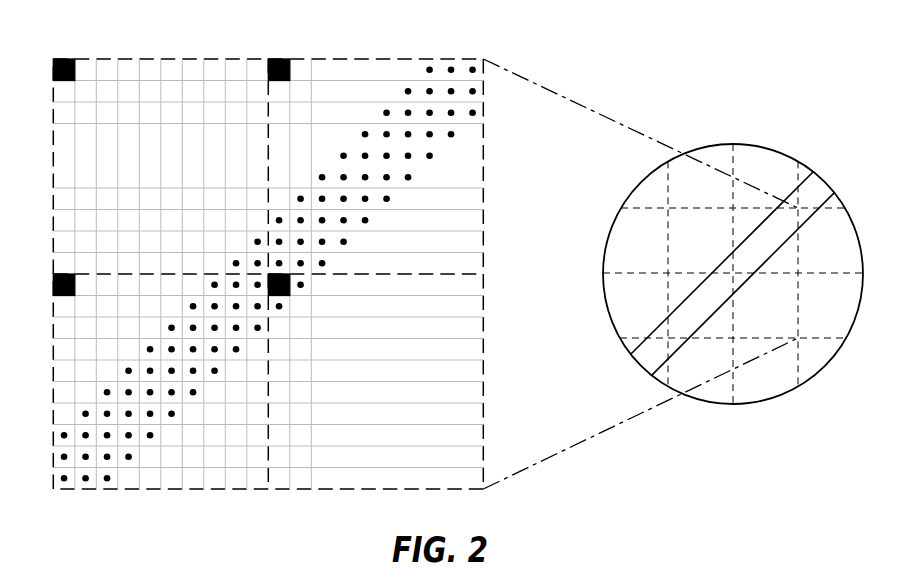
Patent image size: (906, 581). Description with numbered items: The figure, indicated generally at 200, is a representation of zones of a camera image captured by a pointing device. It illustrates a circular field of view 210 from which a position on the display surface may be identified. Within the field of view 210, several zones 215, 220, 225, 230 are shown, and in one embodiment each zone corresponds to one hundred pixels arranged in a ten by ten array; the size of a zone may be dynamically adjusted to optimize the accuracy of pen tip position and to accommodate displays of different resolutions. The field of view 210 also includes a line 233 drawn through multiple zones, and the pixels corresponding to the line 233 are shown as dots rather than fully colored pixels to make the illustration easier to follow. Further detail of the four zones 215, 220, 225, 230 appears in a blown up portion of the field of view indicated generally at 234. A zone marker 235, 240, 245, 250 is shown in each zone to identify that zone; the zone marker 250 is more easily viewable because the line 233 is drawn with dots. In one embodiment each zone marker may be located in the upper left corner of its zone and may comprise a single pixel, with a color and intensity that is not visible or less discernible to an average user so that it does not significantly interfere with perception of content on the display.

The representation of zones of a camera image 200 is at (745, 35).
The circular field of view 210 is at (771, 149).
The zone 215 is at (157, 57).
The zone 220 is at (378, 57).
The zone 225 is at (157, 491).
The zone 230 is at (378, 491).
The line 233 is at (390, 212).
The blown up portion of the field of view 234 is at (72, 38).
The zone marker 235 is at (58, 80).
The zone marker 240 is at (278, 57).
The zone marker 245 is at (58, 296).
The zone marker 250 is at (282, 297).